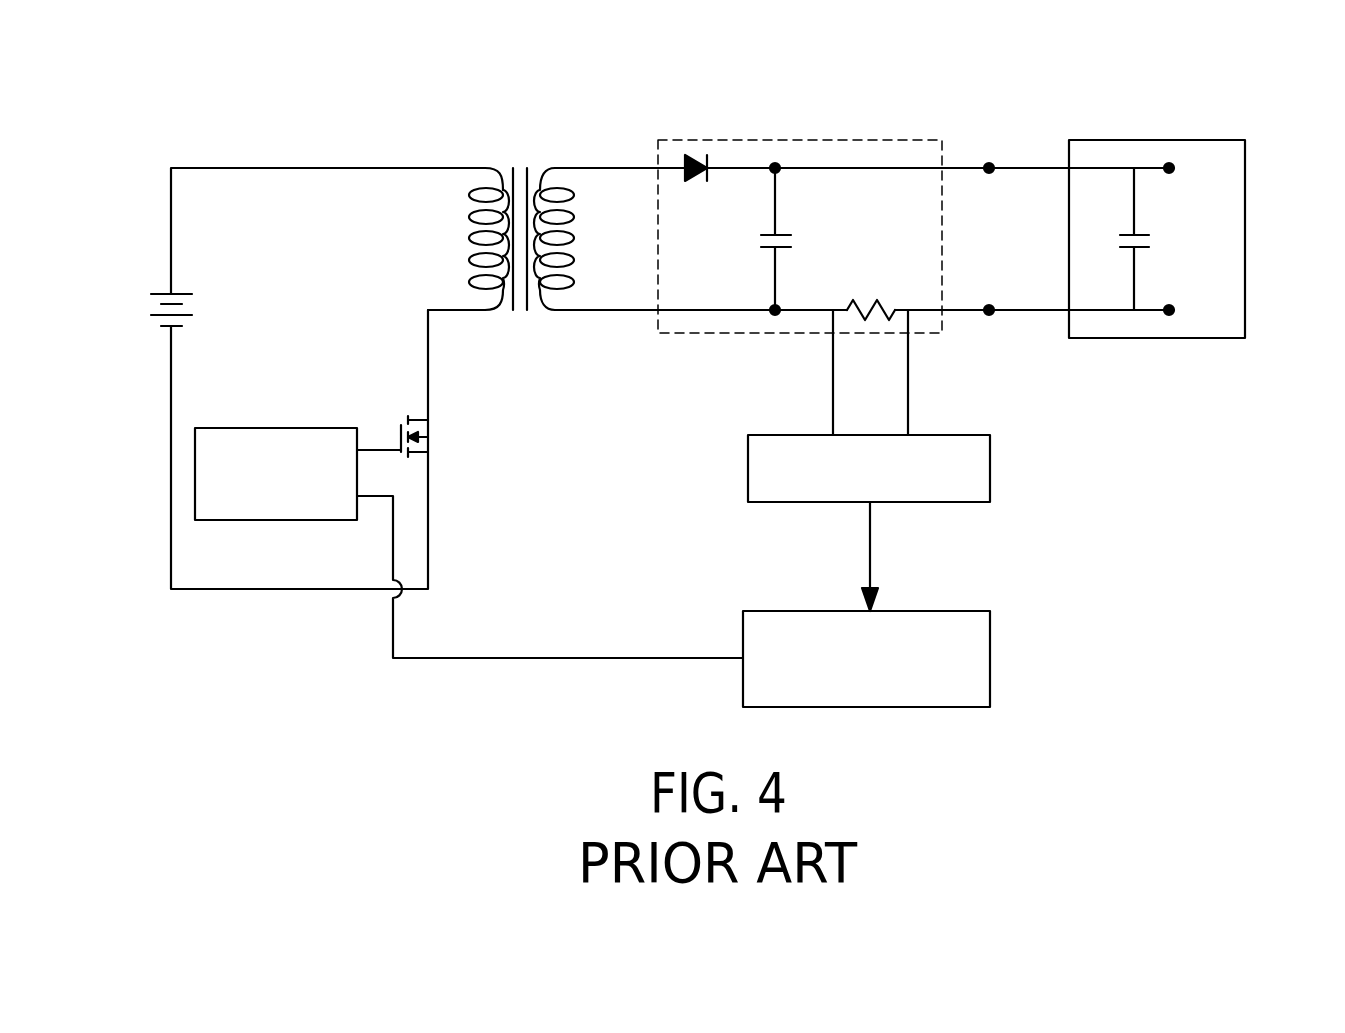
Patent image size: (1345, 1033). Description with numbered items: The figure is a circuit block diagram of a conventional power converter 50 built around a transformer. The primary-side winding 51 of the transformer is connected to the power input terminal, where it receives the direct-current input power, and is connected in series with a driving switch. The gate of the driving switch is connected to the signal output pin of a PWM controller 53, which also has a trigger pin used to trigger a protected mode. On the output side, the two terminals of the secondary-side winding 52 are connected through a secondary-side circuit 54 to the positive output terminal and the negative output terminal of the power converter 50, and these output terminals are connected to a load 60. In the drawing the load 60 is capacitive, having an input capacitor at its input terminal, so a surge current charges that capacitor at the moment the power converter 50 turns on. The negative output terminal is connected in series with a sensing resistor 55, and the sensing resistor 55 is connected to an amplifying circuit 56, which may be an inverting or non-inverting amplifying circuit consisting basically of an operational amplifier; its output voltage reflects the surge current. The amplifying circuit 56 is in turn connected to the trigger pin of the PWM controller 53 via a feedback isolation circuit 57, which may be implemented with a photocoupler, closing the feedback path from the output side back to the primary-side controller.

The power converter 50 is at (711, 103).
The primary-side winding 51 is at (466, 240).
The secondary-side winding 52 is at (575, 237).
The PWM controller 53 is at (286, 428).
The secondary-side circuit 54 is at (800, 140).
The sensing resistor 55 is at (873, 306).
The amplifying circuit 56 is at (990, 470).
The feedback isolation circuit 57 is at (990, 665).
The load 60 is at (1245, 197).